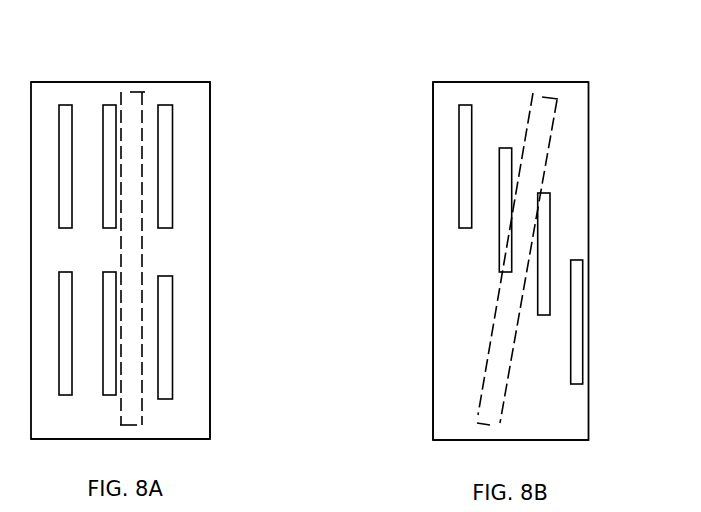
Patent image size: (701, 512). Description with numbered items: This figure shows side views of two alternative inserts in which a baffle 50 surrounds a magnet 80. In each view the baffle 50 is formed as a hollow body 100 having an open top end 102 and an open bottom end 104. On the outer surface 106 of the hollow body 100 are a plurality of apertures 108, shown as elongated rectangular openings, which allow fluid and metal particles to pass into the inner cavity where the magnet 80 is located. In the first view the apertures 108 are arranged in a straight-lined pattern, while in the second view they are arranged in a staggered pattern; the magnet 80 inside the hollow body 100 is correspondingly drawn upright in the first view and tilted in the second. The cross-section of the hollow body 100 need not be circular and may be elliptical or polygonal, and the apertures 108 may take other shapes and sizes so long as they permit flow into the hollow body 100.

In FIG. 8A, the baffle 50 is at (223, 117).
In FIG. 8B, the baffle 50 is at (417, 155).
In FIG. 8A, the magnet 80 is at (143, 182).
In FIG. 8B, the magnet 80 is at (538, 148).
In FIG. 8A, the hollow body 100 is at (211, 205).
In FIG. 8B, the hollow body 100 is at (432, 270).
In FIG. 8A, the open top end 102 is at (133, 81).
In FIG. 8B, the open top end 102 is at (511, 82).
In FIG. 8A, the open bottom end 104 is at (103, 440).
In FIG. 8B, the open bottom end 104 is at (508, 440).
In FIG. 8A, the outer surface 106 is at (187, 338).
In FIG. 8B, the outer surface 106 is at (450, 385).
In FIG. 8A, the apertures 108 is at (172, 205).
In FIG. 8B, the apertures 108 is at (571, 347).